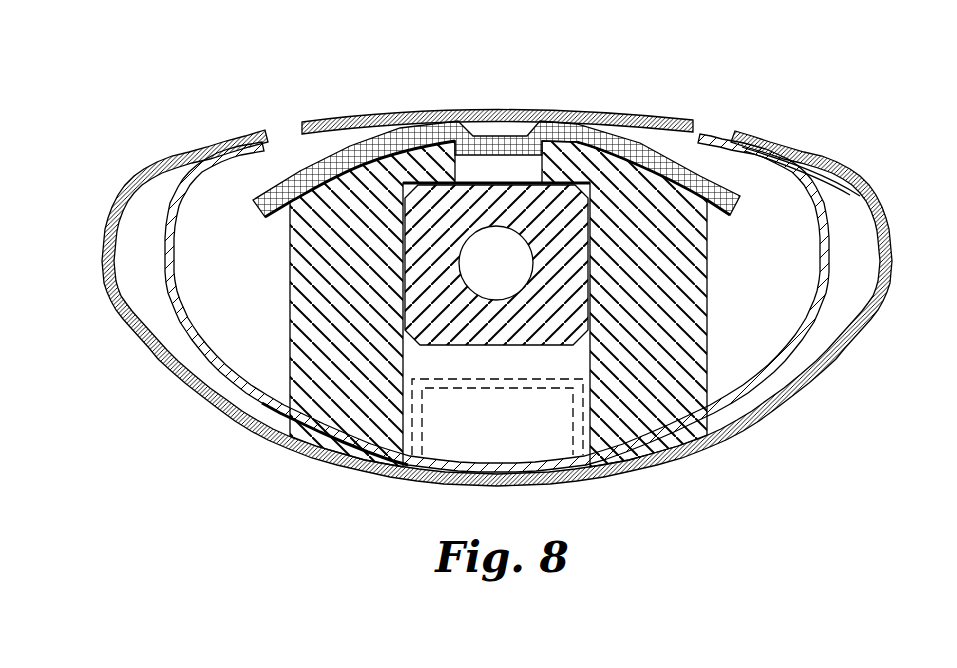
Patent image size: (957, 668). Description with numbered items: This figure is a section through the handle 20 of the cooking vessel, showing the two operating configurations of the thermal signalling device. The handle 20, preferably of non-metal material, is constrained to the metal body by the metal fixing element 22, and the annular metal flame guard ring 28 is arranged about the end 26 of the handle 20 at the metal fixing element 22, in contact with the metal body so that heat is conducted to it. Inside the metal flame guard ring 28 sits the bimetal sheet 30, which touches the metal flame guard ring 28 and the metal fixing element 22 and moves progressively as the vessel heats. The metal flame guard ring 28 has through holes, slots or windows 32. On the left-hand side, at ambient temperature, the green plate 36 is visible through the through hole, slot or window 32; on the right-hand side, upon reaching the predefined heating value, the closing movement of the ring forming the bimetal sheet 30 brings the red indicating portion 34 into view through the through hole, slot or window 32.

The handle 20 is at (539, 304).
The metal fixing element 22 is at (428, 265).
The end of the handle 26 is at (676, 268).
The metal flame guard ring 28 is at (113, 303).
The bimetal sheet 30 is at (158, 242).
The through holes, slots or windows 32 is at (265, 132).
The indicating portion 34 is at (741, 140).
The plate 36 is at (294, 180).